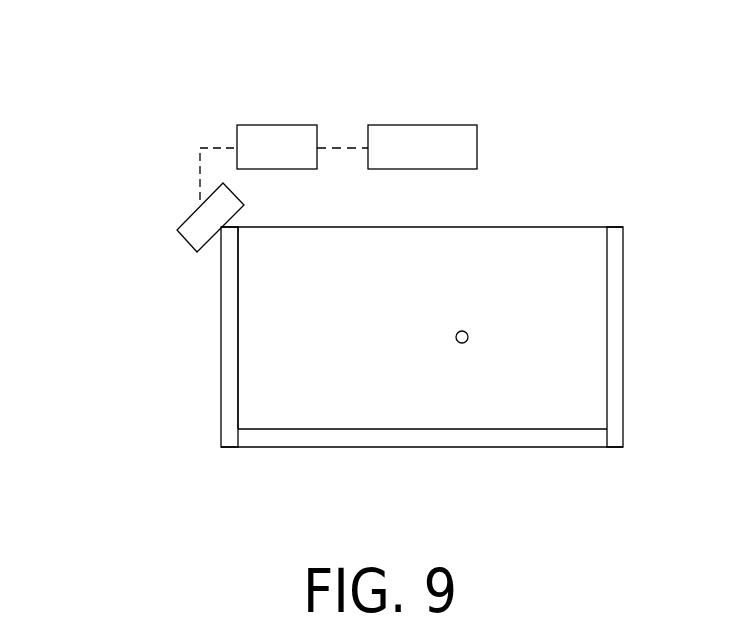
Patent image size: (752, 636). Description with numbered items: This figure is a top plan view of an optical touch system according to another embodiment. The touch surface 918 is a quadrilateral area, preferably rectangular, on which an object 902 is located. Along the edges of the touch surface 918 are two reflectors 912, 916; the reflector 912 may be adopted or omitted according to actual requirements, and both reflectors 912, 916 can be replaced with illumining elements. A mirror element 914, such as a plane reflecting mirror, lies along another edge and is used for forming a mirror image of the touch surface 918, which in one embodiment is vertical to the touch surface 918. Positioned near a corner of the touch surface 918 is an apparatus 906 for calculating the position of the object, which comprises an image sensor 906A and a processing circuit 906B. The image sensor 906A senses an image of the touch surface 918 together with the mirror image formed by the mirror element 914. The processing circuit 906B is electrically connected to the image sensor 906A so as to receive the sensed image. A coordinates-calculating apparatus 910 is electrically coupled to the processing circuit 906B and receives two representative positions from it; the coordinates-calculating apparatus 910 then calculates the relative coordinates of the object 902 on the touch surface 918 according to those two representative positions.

The object 902 is at (462, 343).
The apparatus for calculating the position of the object 906 is at (208, 43).
The image sensor 906A is at (190, 228).
The processing circuit 906B is at (240, 137).
The coordinates-calculating apparatus 910 is at (477, 146).
The reflector 912 is at (225, 316).
The mirror element 914 is at (575, 440).
The reflector 916 is at (617, 336).
The touch surface 918 is at (246, 354).